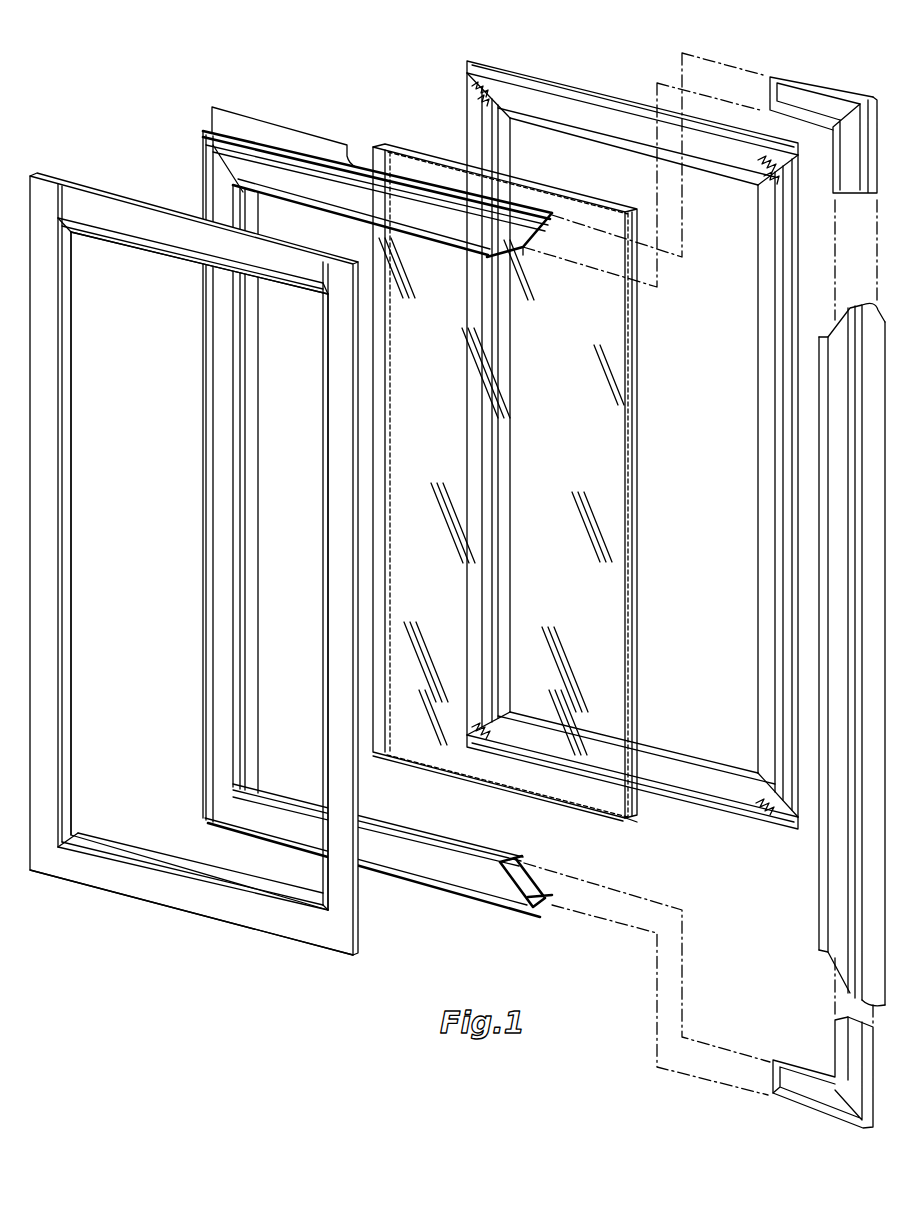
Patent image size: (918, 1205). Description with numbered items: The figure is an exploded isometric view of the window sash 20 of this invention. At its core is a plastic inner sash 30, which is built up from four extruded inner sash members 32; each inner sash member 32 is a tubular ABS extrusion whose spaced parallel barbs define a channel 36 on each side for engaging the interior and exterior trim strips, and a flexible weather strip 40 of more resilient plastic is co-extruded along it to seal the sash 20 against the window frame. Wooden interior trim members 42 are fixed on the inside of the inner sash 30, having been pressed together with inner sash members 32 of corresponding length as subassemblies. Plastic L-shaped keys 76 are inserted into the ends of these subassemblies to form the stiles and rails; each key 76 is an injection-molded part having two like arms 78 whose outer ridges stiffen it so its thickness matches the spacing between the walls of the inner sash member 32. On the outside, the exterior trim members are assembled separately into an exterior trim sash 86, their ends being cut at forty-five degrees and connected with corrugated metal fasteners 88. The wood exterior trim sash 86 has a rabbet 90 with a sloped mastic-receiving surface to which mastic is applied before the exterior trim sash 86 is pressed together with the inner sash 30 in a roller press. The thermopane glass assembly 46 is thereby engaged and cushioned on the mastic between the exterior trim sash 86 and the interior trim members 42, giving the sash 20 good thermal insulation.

The sash 20 is at (723, 110).
The inner sash 30 is at (194, 572).
The inner sash member 32 is at (452, 897).
The channel 36 is at (815, 661).
The flexible weather strip 40 is at (855, 1000).
The interior trim member 42 is at (202, 917).
The thermopane glass assembly 46 is at (638, 570).
The key 76 is at (808, 580).
The arm 78 is at (800, 82).
The exterior trim sash 86 is at (591, 418).
The corrugated metal fastener 88 is at (468, 98).
The rabbet 90 is at (708, 178).